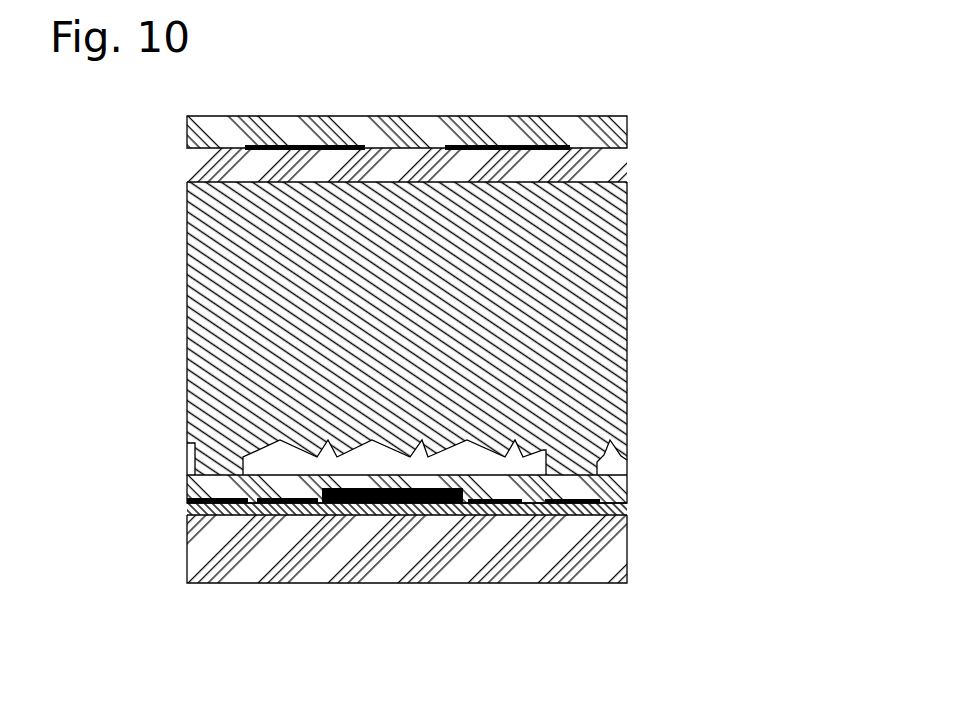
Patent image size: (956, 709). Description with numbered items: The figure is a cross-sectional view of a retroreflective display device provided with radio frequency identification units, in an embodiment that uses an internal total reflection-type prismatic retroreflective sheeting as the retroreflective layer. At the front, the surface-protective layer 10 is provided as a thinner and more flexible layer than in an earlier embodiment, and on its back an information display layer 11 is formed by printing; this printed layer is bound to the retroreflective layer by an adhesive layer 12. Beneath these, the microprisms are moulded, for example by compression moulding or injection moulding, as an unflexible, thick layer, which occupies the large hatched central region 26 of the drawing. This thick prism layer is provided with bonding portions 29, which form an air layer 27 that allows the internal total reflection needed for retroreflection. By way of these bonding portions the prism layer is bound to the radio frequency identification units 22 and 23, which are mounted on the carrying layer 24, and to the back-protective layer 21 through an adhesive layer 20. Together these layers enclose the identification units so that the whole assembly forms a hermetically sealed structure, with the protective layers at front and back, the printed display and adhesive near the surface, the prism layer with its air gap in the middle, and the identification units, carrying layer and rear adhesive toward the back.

The surface-protective layer 10 is at (612, 138).
The adhesive layer 12 is at (598, 175).
The information display layer 11 is at (485, 153).
The spacer layer 26 is at (622, 369).
The bonding portions 29 is at (567, 462).
The air layer 27 is at (612, 462).
The adhesive layer 20 is at (612, 489).
The radio frequency identification unit 22 is at (282, 504).
The carrying layer 24 is at (207, 508).
The radio frequency identification unit 23 is at (438, 503).
The back-protective layer 21 is at (578, 545).